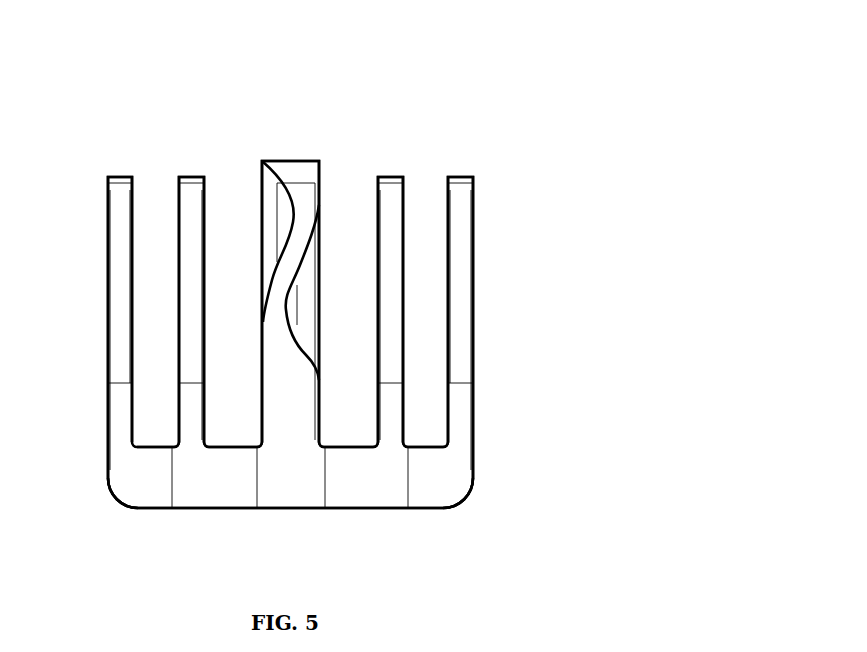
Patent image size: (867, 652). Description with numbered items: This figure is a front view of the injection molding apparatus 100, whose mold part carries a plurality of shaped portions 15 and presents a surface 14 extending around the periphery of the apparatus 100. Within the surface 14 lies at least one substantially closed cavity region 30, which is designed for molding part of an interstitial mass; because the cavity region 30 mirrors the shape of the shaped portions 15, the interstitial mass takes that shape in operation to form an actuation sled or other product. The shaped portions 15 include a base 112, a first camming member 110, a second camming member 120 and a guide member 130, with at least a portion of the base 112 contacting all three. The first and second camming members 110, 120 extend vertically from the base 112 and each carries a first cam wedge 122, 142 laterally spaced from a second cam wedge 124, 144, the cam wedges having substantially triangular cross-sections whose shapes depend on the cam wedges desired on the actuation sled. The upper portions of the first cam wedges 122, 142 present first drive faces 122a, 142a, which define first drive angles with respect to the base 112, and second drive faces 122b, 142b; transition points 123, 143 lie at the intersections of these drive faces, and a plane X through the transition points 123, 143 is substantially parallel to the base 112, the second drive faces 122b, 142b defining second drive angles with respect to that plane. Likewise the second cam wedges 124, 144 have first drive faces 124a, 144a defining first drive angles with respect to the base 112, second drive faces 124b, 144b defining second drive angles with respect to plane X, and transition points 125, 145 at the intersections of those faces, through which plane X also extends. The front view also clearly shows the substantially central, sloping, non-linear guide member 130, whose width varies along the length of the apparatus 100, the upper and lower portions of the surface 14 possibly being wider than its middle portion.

The injection molding apparatus 100 is at (466, 75).
The first camming member 110 is at (477, 198).
The second camming member 120 is at (107, 193).
The guide member 130 is at (292, 160).
The surface 14 is at (310, 230).
The cavity region 30 is at (140, 182).
The base 112 is at (305, 512).
The shaped portion 15 is at (122, 500).
The first cam wedge 122 is at (392, 237).
The first drive face 122a is at (388, 410).
The second drive face 122b is at (388, 307).
The transition point 123 is at (387, 378).
The second cam wedge 124 is at (467, 292).
The first drive face 124a is at (462, 442).
The second drive face 124b is at (463, 340).
The transition point 125 is at (476, 382).
The first cam wedge 142 is at (187, 255).
The first drive face 142a is at (197, 412).
The second drive face 142b is at (197, 308).
The transition point 143 is at (178, 383).
The second cam wedge 144 is at (115, 282).
The first drive face 144a is at (115, 450).
The second drive face 144b is at (115, 320).
The transition point 145 is at (107, 383).